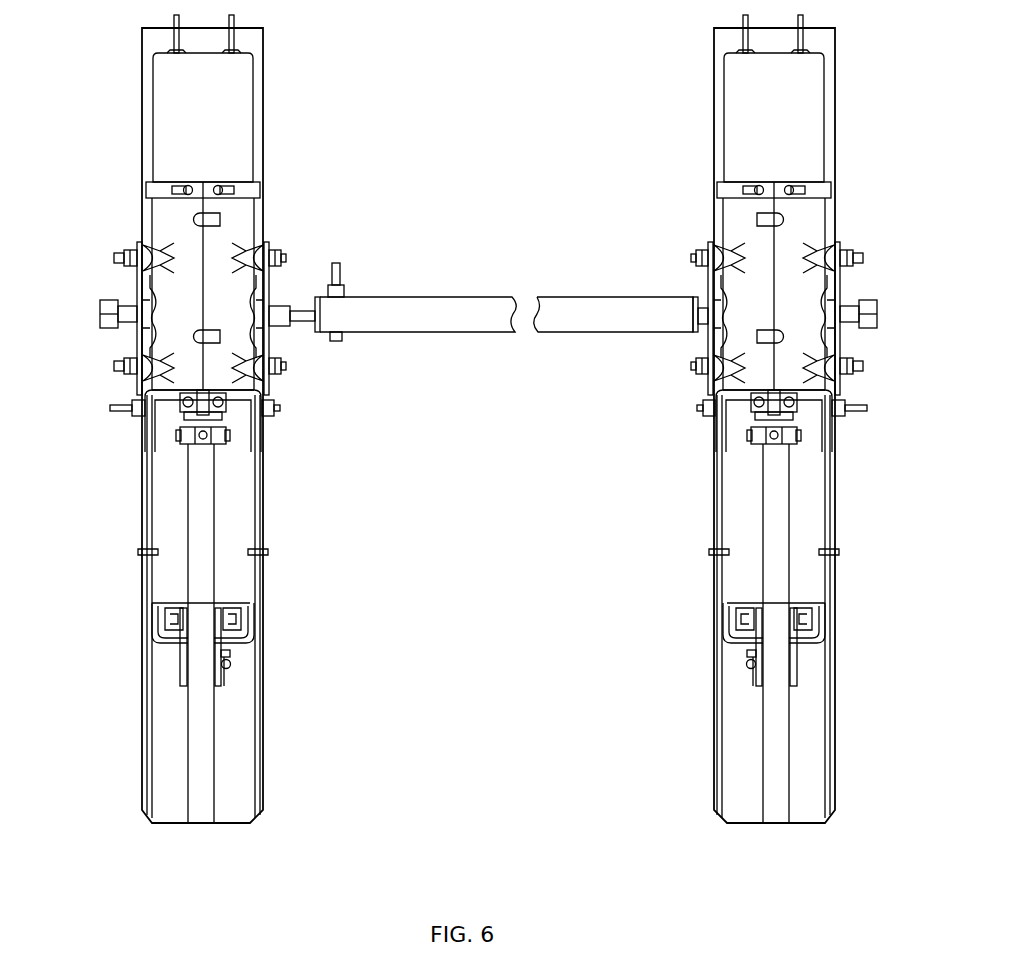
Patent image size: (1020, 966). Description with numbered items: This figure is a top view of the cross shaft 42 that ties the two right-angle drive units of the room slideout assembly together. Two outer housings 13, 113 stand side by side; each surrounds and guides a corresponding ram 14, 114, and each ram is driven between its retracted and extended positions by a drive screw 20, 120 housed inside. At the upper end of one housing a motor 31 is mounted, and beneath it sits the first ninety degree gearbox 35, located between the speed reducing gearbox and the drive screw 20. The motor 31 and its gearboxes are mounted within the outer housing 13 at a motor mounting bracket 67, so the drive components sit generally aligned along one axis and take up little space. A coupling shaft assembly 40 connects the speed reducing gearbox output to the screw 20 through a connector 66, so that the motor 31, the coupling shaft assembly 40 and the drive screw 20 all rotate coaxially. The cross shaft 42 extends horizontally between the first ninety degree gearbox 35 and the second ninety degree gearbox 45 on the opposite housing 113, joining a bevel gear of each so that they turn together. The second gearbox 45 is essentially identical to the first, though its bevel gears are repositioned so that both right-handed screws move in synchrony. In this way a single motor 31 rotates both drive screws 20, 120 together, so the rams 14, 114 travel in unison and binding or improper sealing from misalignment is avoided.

The outer housing 13 is at (836, 168).
The ram 14 is at (825, 640).
The drive screw 20 is at (778, 510).
The motor 31 is at (243, 106).
The 90 degree gearbox 35 is at (855, 287).
The coupling shaft assembly 40 is at (225, 402).
The cross shaft 42 is at (390, 300).
The second 90 degree gearbox 45 is at (120, 290).
The connector 66 is at (222, 431).
The motor mounting bracket 67 is at (148, 440).
The outer housing 113 is at (265, 166).
The ram 114 is at (255, 640).
The drive screw 120 is at (210, 520).